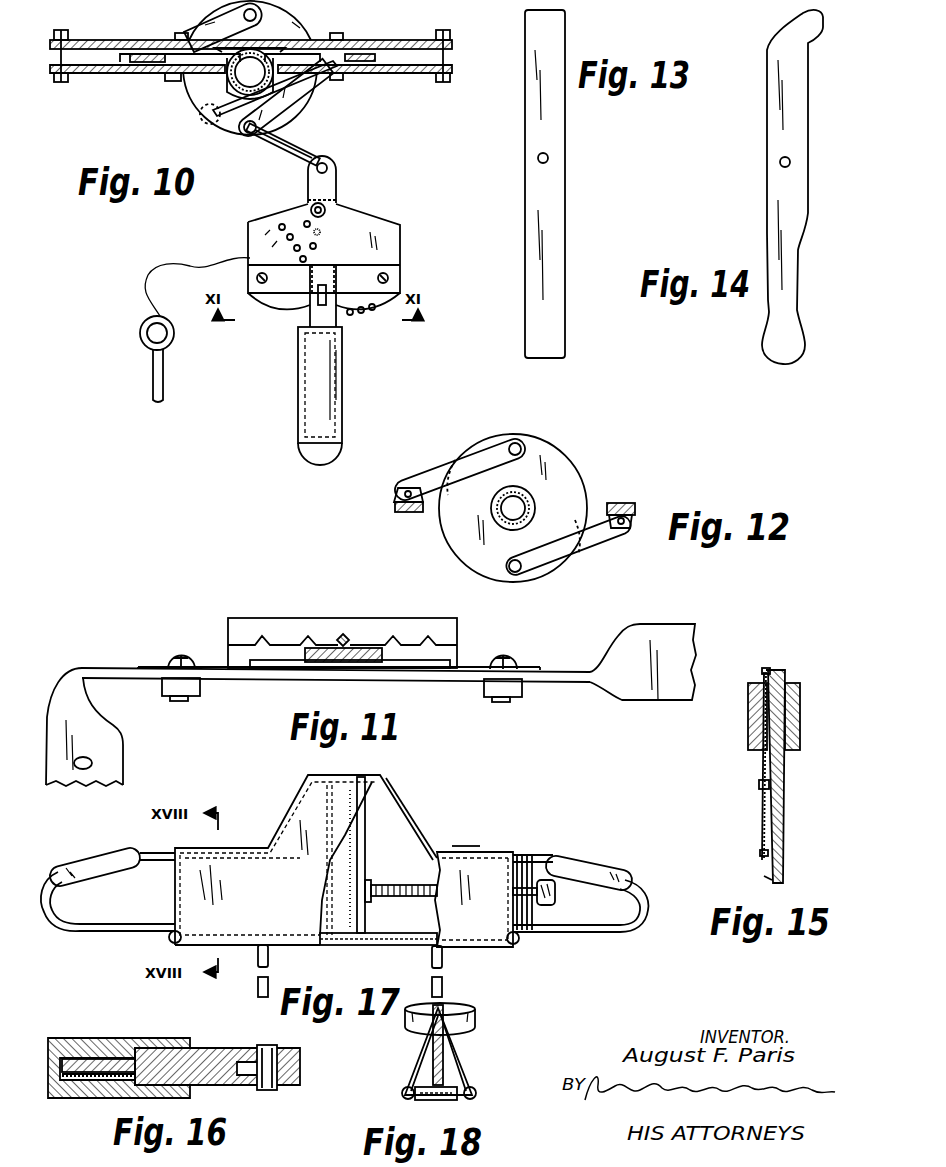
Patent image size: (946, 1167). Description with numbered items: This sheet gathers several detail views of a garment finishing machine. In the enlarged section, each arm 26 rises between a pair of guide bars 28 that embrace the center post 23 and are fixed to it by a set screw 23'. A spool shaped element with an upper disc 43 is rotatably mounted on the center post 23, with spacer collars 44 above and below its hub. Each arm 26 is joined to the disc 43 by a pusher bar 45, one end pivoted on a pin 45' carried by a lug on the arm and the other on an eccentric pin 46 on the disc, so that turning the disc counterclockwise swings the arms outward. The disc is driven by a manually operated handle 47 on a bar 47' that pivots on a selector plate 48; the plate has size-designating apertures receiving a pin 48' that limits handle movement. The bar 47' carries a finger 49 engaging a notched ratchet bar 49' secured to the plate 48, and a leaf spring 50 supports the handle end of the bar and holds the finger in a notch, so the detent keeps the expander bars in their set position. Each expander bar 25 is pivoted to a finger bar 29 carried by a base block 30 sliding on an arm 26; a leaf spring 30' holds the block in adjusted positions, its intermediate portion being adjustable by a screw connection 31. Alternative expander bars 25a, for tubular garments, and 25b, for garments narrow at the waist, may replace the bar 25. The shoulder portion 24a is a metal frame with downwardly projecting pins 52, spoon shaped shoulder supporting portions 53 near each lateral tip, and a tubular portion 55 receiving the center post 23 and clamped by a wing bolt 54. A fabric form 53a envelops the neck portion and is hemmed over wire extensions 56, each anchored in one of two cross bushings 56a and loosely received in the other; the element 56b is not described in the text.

In FIG. 10, the center post 23 is at (219, 75).
In FIG. 10, the set screw 23' is at (202, 127).
In FIG. 17, the shoulder portion 24a is at (467, 835).
In FIG. 16, the expander bar 25 is at (300, 1066).
In FIG. 13, the expander bar 25a is at (562, 240).
In FIG. 14, the expander bar 25b is at (768, 225).
In FIG. 10, the arm 26 is at (355, 45).
In FIG. 12, the arm 26 is at (410, 513).
In FIG. 15, the arm 26 is at (782, 865).
In FIG. 16, the arm 26 is at (80, 1058).
In FIG. 10, the guide bar 28 is at (428, 41).
In FIG. 16, the finger bar 29 is at (235, 1040).
In FIG. 15, the base block 30 is at (789, 716).
In FIG. 16, the base block 30 is at (119, 1052).
In FIG. 15, the leaf spring 30' is at (747, 764).
In FIG. 16, the leaf spring 30' is at (89, 1100).
In FIG. 15, the screw connection 31 is at (759, 783).
In FIG. 10, the disc 43 is at (296, 35).
In FIG. 12, the disc 43 is at (575, 468).
In FIG. 10, the spacer collar 44 is at (305, 92).
In FIG. 10, the pusher bar 45 is at (227, 71).
In FIG. 12, the pusher bar 45 is at (513, 508).
In FIG. 12, the pin 45' is at (521, 519).
In FIG. 10, the pin 46 is at (244, 14).
In FIG. 12, the pin 46 is at (515, 443).
In FIG. 10, the handle 47 is at (338, 396).
In FIG. 10, the bar 47' is at (342, 185).
In FIG. 11, the bar 47' is at (350, 630).
In FIG. 10, the selector plate 48 is at (343, 265).
In FIG. 10, the pin 48' is at (195, 330).
In FIG. 10, the finger 49 is at (293, 314).
In FIG. 11, the finger 49 is at (339, 619).
In FIG. 11, the ratchet bar 49' is at (342, 630).
In FIG. 11, the leaf spring 50 is at (425, 664).
In FIG. 17, the pin 52 is at (268, 958).
In FIG. 17, the shoulder supporting portion 53 is at (90, 866).
In FIG. 18, the shoulder supporting portion 53 is at (472, 1018).
In FIG. 17, the fabric form 53a is at (292, 838).
In FIG. 18, the fabric form 53a is at (412, 1058).
In FIG. 17, the wing bolt 54 is at (375, 890).
In FIG. 17, the tubular portion 55 is at (365, 845).
In FIG. 17, the extension 56 is at (376, 945).
In FIG. 18, the extension 56 is at (404, 1096).
In FIG. 18, the cross bushing 56a is at (452, 1100).
In FIG. 17, the rod 56b is at (608, 932).
In FIG. 18, the rod 56b is at (446, 1080).